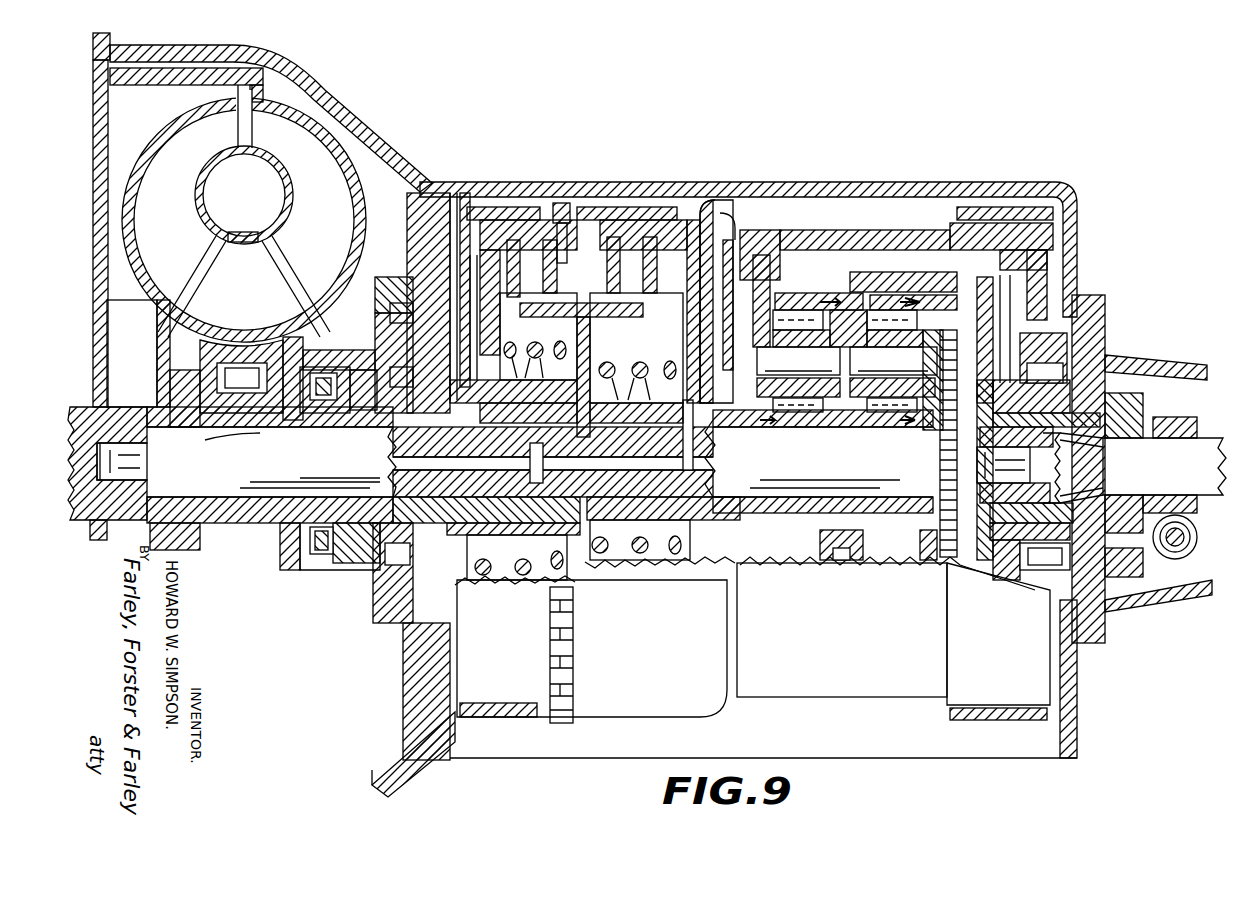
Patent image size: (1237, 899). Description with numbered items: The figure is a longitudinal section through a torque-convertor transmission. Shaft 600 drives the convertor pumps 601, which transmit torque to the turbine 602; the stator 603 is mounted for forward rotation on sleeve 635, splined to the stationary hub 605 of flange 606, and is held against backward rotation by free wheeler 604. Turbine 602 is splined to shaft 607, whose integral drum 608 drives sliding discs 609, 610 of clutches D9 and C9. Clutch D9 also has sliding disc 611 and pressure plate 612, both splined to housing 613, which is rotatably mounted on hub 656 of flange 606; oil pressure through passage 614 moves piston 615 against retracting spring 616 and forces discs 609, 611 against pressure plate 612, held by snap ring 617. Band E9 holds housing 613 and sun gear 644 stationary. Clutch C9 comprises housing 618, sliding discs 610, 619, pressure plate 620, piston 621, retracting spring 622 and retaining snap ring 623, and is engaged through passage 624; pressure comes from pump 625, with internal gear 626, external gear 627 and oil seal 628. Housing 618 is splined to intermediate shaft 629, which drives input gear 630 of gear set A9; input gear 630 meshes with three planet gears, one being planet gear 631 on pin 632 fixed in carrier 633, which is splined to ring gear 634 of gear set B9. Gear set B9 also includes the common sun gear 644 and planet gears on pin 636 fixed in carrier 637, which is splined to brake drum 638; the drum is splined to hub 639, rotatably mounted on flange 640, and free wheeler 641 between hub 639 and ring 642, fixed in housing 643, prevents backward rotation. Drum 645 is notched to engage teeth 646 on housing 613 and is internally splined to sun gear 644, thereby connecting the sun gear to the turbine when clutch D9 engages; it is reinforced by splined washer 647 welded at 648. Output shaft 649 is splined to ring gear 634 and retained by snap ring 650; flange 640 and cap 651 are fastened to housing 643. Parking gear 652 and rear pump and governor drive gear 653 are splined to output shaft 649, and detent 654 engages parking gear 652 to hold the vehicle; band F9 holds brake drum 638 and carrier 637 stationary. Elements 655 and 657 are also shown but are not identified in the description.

The shaft 600 is at (123, 407).
The convertor pumps 601 is at (338, 197).
The turbine 602 is at (188, 197).
The stator 603 is at (258, 292).
The free wheeler 604 is at (241, 376).
The stationary hub 605 is at (388, 437).
The flange 606 is at (403, 662).
The shaft 607 is at (263, 465).
The drum 608 is at (612, 310).
The sliding disc 609 is at (552, 280).
The sliding disc 610 is at (670, 230).
The sliding disc 611 is at (505, 355).
The pressure plate 612 is at (557, 300).
The housing 613 is at (500, 210).
The passage 614 is at (433, 290).
The piston 615 is at (440, 232).
The retracting spring 616 is at (520, 360).
The snap ring 617 is at (565, 210).
The housing 618 is at (733, 200).
The sliding disc 619 is at (680, 330).
The pressure plate 620 is at (655, 240).
The piston 621 is at (686, 355).
The retracting spring 622 is at (628, 355).
The retaining snap ring 623 is at (612, 240).
The passage 624 is at (455, 580).
The pump 625 is at (373, 605).
The internal gear 626 is at (388, 310).
The external gear 627 is at (390, 327).
The oil seal 628 is at (325, 556).
The intermediate shaft 629 is at (890, 520).
The input gear 630 is at (895, 295).
The planet gear 631 is at (895, 432).
The pin 632 is at (914, 369).
The carrier 633 is at (862, 432).
The ring gear 634 is at (855, 280).
The sleeve 635 is at (225, 535).
The pin 636 is at (812, 369).
The carrier 637 is at (745, 255).
The brake drum 638 is at (790, 250).
The hub 639 is at (1000, 330).
The flange 640 is at (1107, 297).
The free wheeler 641 is at (1038, 456).
The ring 642 is at (1107, 327).
The housing 643 is at (775, 200).
The sun gear 644 is at (818, 520).
The drum 645 is at (670, 645).
The teeth 646 is at (550, 650).
The splined washer 647 is at (705, 565).
The weld 648 is at (750, 400).
The output shaft 649 is at (1170, 478).
The snap ring 650 is at (1060, 280).
The cap 651 is at (1160, 362).
The parking gear 652 is at (1130, 400).
The rear pump and governor drive gear 653 is at (1178, 415).
The detent 654 is at (1125, 592).
The plate 655 is at (1012, 300).
The hub 656 is at (572, 570).
The plate 657 is at (828, 296).
The gear set A9 is at (938, 281).
The gear set B9 is at (820, 254).
The clutch C9 is at (720, 212).
The clutch D9 is at (462, 195).
The band E9 is at (535, 220).
The band F9 is at (1000, 207).